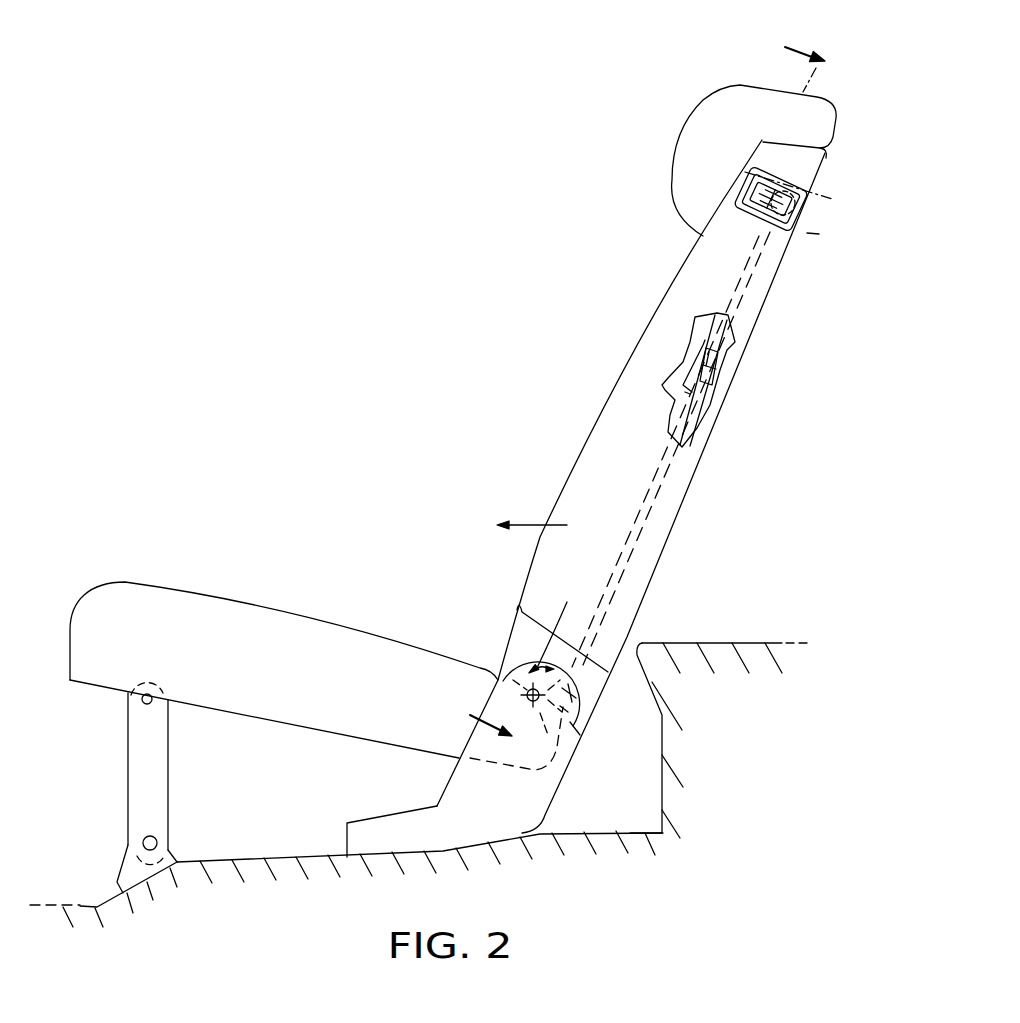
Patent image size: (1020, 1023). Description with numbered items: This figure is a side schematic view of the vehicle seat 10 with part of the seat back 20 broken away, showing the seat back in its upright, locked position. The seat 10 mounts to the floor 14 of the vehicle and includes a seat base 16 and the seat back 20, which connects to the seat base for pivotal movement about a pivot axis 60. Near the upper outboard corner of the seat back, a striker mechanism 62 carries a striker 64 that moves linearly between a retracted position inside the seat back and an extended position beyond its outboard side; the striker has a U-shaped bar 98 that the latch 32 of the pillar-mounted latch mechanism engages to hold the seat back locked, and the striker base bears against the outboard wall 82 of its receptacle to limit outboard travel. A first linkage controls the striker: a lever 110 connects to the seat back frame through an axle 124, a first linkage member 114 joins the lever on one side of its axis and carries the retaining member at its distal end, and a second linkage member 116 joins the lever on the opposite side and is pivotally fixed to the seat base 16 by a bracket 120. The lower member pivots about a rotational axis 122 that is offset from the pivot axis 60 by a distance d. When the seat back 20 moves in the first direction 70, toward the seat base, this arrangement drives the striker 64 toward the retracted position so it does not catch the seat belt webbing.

The vehicle seat 10 is at (553, 228).
The floor 14 is at (257, 860).
The seat base 16 is at (215, 585).
The seat back 20 is at (583, 443).
The latch 32 is at (814, 236).
The pivot axis 60 is at (527, 690).
The striker mechanism 62 is at (730, 197).
The striker 64 is at (806, 208).
The first direction 70 is at (533, 526).
The outboard wall 82 is at (740, 216).
The U-shaped bar 98 is at (770, 180).
The lever 110 is at (680, 401).
The first linkage member 114 is at (715, 332).
The second linkage member 116 is at (693, 430).
The bracket 120 is at (585, 737).
The rotational axis 122 is at (580, 700).
The axle 124 is at (722, 377).